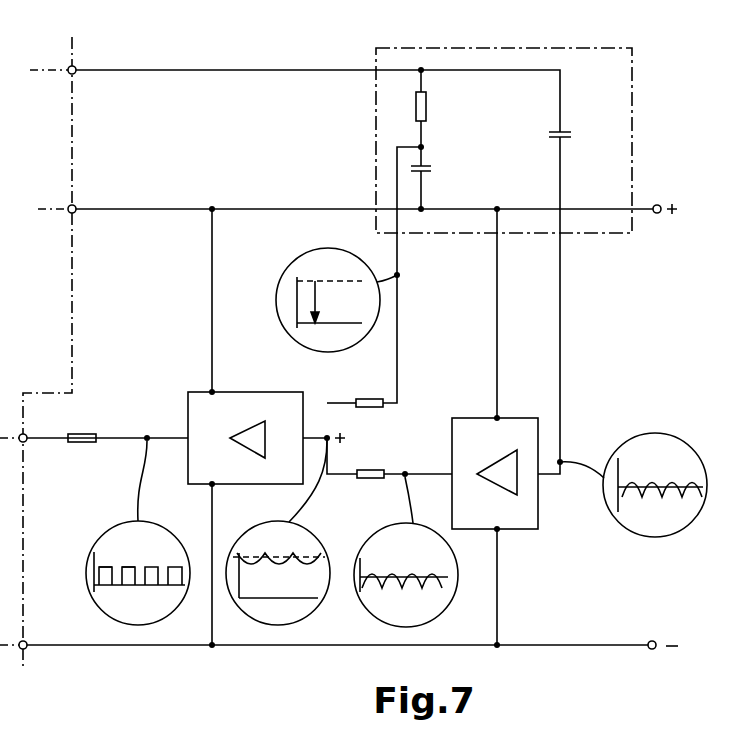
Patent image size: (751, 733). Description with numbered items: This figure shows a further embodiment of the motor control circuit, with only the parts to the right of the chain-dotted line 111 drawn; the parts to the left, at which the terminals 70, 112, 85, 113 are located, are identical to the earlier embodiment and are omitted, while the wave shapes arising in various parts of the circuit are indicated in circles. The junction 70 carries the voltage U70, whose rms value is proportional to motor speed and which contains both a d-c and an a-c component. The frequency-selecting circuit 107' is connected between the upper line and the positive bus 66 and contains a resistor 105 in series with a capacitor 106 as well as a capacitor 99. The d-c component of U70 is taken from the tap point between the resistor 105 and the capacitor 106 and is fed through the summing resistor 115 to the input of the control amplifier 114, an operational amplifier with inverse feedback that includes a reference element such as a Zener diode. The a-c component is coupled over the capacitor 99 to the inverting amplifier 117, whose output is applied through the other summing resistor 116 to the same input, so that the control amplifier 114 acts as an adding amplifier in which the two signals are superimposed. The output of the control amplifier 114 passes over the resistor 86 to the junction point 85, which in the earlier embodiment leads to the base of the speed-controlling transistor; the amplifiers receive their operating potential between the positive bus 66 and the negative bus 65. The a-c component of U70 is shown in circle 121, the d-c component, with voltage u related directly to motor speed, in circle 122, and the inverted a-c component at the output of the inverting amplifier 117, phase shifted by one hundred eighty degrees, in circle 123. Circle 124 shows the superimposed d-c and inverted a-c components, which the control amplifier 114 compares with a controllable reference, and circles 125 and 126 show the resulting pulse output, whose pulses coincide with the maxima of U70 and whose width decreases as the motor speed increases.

The junction 70 is at (75, 67).
The chain-dotted line 111 is at (72, 153).
The terminal 112 is at (74, 212).
The frequency-selecting circuit 107' is at (535, 140).
The resistor 105 is at (426, 108).
The capacitor 106 is at (432, 169).
The capacitor 99 is at (572, 135).
The positive bus 66 is at (659, 206).
The negative bus 65 is at (655, 641).
The junction point 85 is at (26, 441).
The resistor 86 is at (84, 442).
The terminal 113 is at (27, 642).
The control amplifier 114 is at (243, 402).
The resistor 115 is at (368, 399).
The resistor 116 is at (370, 479).
The inverting amplifier 117 is at (521, 432).
The circle 121 is at (690, 443).
The circle 122 is at (302, 260).
The circle 123 is at (358, 603).
The circle 124 is at (235, 604).
The circle 125 is at (175, 532).
The circle 126 is at (129, 567).